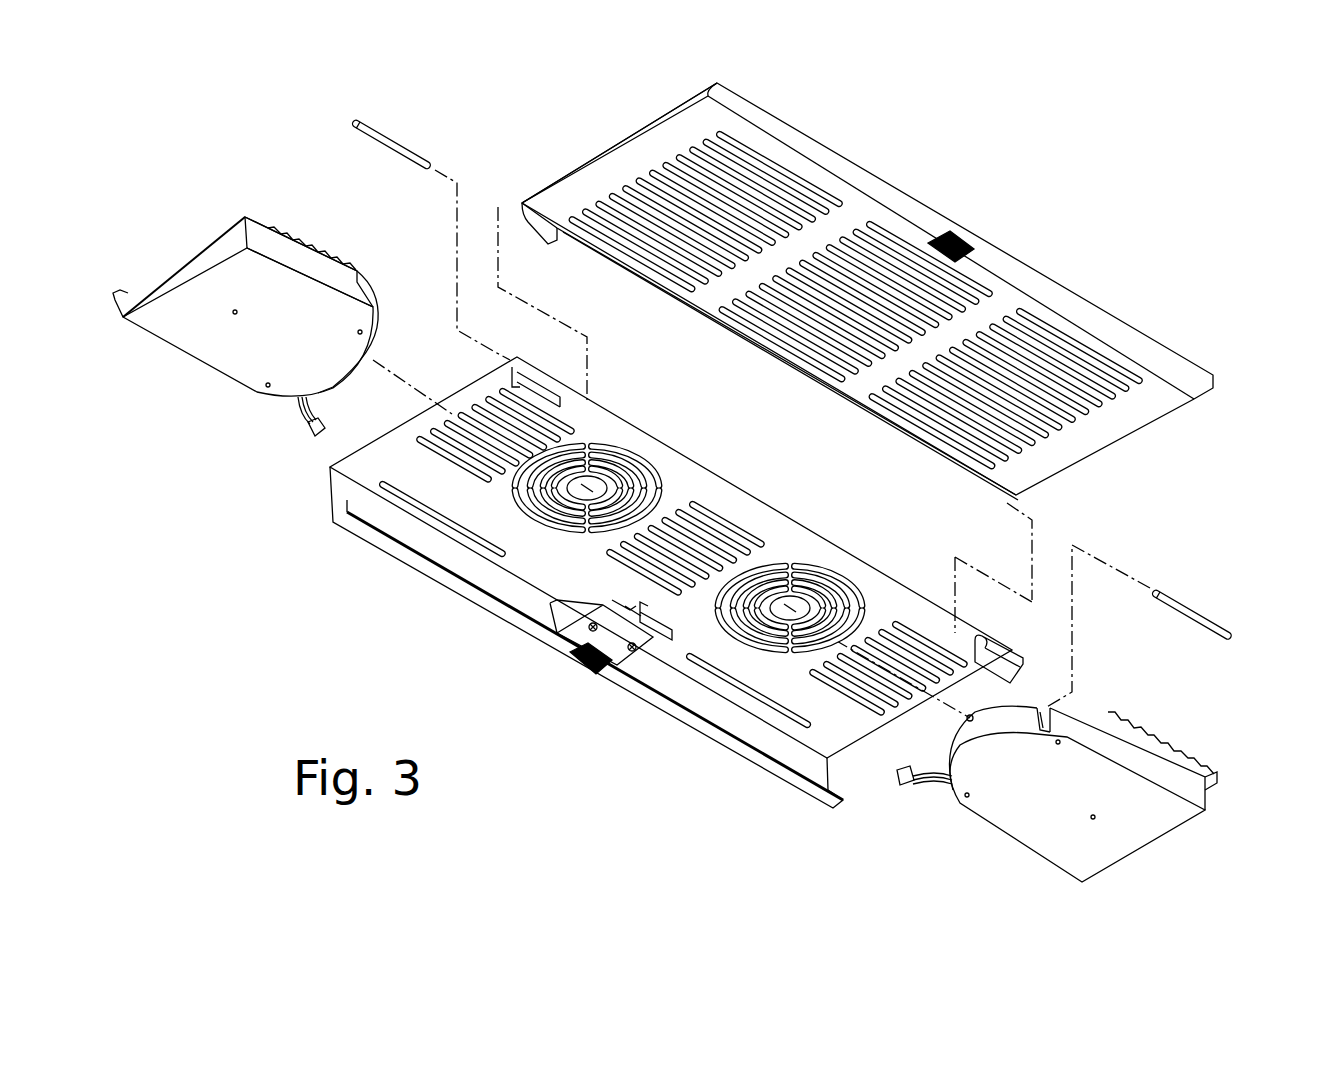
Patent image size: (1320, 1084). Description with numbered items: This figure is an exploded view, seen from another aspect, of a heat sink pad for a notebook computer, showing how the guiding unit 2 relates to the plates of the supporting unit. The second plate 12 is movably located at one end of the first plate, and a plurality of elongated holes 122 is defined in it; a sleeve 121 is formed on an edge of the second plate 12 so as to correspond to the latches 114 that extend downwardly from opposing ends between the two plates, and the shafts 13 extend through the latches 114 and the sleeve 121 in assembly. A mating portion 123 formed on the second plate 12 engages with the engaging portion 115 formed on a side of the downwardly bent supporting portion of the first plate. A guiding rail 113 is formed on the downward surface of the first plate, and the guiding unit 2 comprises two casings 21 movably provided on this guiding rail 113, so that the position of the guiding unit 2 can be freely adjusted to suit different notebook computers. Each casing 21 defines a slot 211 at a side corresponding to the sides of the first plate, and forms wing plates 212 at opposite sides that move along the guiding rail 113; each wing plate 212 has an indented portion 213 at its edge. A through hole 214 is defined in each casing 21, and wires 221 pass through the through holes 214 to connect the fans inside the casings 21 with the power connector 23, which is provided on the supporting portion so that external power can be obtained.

The guiding unit 2 is at (684, 525).
The second plate 12 is at (867, 291).
The shaft 13 is at (393, 142).
The casing 21 is at (684, 525).
The power connector 23 is at (570, 638).
The guiding rail 113 is at (683, 630).
The latch 114 is at (1008, 648).
The engaging portion 115 is at (590, 672).
The sleeve 121 is at (792, 392).
The elongated hole 122 is at (1122, 393).
The mating portion 123 is at (975, 246).
The slot 211 is at (176, 268).
The wing plate 212 is at (250, 216).
The indented portion 213 is at (292, 226).
The through hole 214 is at (1068, 713).
The wire 221 is at (313, 437).